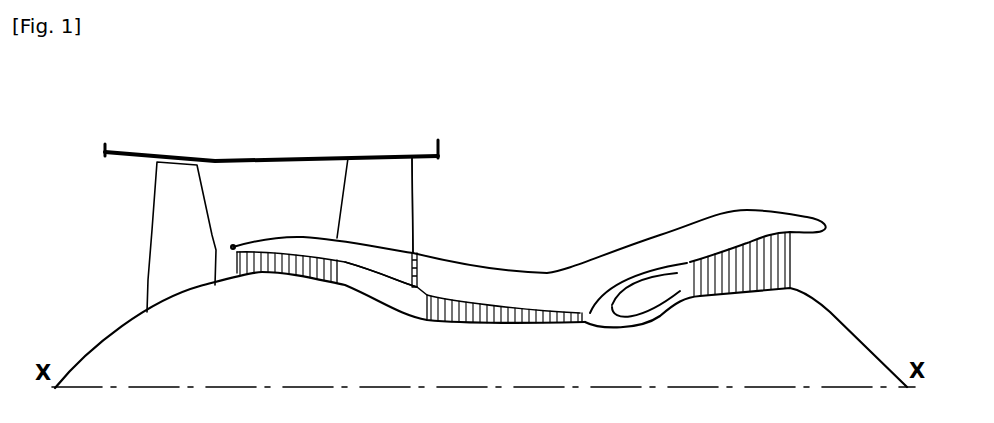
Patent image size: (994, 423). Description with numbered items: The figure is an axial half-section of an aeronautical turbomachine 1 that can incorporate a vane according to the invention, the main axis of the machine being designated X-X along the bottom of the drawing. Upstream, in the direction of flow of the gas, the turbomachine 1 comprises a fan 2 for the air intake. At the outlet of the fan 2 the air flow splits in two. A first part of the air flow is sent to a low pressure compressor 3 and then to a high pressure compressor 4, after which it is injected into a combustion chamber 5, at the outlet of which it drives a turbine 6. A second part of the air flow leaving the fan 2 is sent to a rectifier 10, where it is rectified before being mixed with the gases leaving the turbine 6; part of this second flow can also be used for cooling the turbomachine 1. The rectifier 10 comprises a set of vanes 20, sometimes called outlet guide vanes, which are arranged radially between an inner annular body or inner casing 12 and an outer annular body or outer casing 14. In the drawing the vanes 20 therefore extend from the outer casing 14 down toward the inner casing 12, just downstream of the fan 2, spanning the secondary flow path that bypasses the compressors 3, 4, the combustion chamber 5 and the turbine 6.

The turbomachine 1 is at (520, 185).
The fan 2 is at (165, 237).
The low pressure compressor 3 is at (248, 240).
The high pressure compressor 4 is at (478, 295).
The combustion chamber 5 is at (633, 292).
The turbine 6 is at (703, 248).
The rectifier 10 is at (337, 211).
The inner casing 12 is at (365, 266).
The outer casing 14 is at (373, 155).
The vanes 20 is at (402, 183).